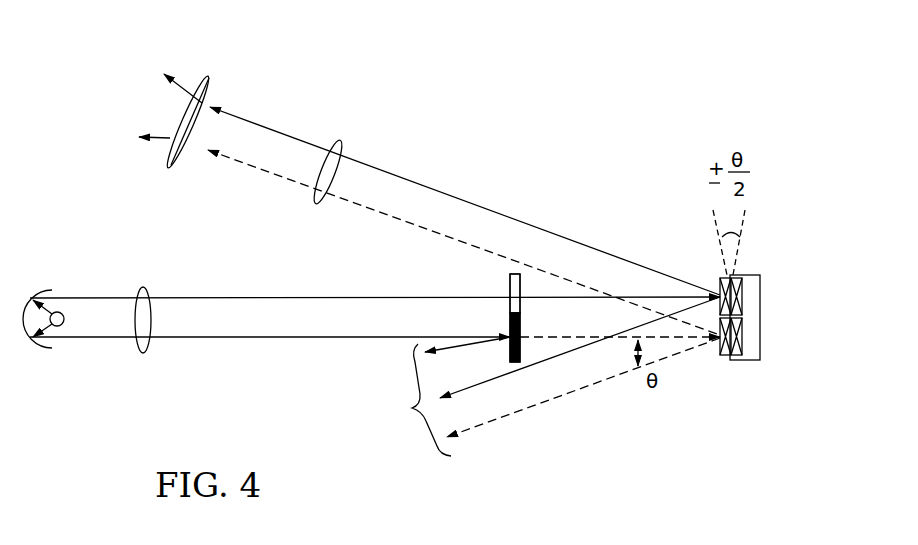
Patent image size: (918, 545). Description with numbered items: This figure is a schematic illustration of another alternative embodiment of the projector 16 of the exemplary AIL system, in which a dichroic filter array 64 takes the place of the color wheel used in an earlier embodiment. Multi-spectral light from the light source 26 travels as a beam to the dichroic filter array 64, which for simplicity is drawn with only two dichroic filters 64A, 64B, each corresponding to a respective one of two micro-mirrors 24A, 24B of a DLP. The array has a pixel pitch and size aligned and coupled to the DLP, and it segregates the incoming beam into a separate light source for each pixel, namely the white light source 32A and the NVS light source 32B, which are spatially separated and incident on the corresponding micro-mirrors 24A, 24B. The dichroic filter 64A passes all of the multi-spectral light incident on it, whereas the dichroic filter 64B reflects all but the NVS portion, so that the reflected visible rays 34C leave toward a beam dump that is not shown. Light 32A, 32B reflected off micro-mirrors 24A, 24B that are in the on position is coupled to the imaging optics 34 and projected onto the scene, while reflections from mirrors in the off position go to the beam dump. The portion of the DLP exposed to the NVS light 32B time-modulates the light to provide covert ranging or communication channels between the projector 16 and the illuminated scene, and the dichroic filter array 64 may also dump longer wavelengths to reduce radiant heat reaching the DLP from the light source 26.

The projector 16 is at (624, 100).
The light source 26 is at (66, 282).
The white light source 32A is at (553, 297).
The NVS light source 32B is at (588, 337).
The imaging optics 34 is at (211, 80).
The reflected light beams 34C is at (467, 346).
The dichroic filter array 64 is at (515, 274).
The dichroic filter 64A is at (510, 280).
The dichroic filter 64B is at (517, 362).
The micro-mirror 24A is at (777, 278).
The micro-mirror 24B is at (777, 318).